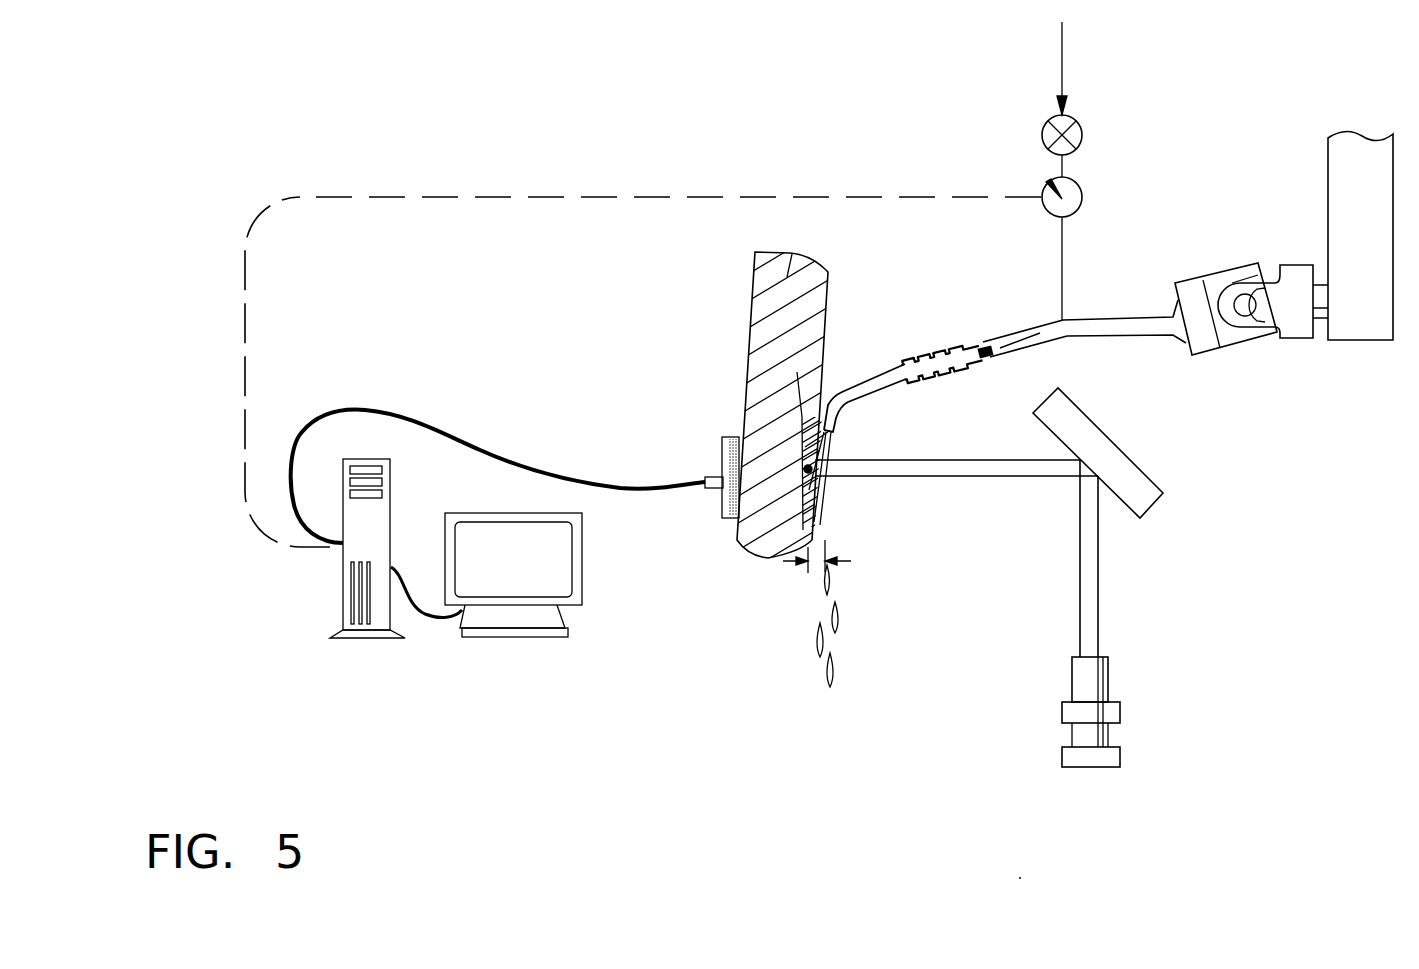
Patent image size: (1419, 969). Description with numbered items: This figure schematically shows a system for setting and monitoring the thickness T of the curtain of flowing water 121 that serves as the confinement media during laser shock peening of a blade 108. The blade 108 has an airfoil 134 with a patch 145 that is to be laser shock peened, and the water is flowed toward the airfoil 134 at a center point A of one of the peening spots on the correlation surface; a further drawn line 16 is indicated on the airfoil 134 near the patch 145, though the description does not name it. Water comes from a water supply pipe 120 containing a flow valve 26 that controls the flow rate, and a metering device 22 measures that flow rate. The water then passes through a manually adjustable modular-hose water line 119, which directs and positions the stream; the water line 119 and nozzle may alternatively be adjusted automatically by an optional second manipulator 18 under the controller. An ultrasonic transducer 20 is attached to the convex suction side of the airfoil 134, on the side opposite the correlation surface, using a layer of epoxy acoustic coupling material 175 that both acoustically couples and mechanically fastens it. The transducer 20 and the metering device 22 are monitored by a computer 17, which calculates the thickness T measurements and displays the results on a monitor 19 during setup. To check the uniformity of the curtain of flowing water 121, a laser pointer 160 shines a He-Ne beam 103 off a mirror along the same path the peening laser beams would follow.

The water supply pipe 120 is at (1062, 70).
The flow valve 26 is at (1082, 137).
The metering device 22 is at (1082, 196).
The second manipulator 18 is at (1290, 205).
The water line 119 is at (940, 352).
The ultrasonic transducer 20 is at (827, 400).
The epoxy acoustic coupling material 175 is at (733, 520).
The blade 108 is at (740, 298).
The airfoil 134 is at (792, 254).
The wheel boundary line 16 is at (797, 372).
The patch 145 is at (807, 508).
The curtain of flowing water 121 is at (815, 437).
The center point A is at (815, 472).
The thickness T is at (851, 561).
The computer 17 is at (387, 503).
The monitor 19 is at (582, 538).
The He-Ne beam 103 is at (1098, 567).
The laser pointer 160 is at (1108, 677).